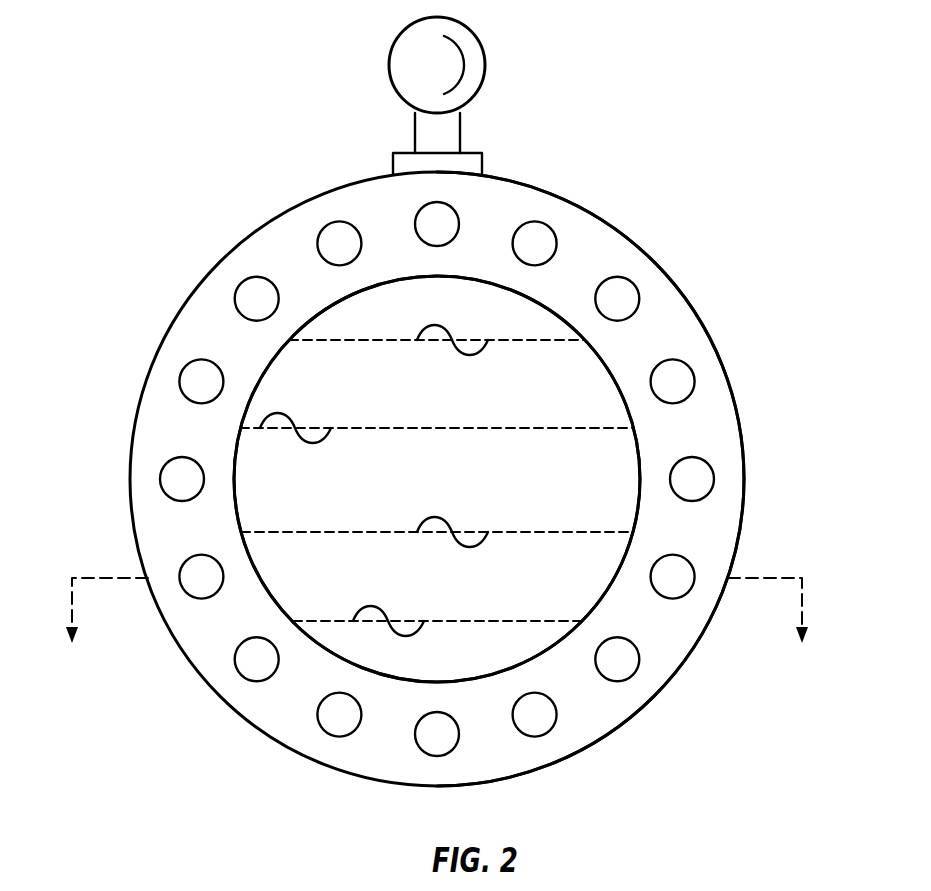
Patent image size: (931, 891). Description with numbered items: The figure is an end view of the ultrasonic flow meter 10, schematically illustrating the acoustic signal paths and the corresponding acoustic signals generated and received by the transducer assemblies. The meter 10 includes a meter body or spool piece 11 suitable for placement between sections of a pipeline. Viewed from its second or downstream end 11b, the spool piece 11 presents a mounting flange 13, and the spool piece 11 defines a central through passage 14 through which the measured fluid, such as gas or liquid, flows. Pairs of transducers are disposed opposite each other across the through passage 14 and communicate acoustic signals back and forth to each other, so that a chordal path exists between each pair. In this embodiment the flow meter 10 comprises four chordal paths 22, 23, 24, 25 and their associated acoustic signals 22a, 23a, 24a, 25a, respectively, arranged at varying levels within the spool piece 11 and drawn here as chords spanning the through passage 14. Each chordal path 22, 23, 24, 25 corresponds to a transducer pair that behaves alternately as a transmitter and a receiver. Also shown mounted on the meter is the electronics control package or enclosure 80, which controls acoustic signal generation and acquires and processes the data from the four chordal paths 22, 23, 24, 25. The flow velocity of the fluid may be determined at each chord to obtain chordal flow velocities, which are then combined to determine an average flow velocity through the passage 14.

The ultrasonic flow meter 10 is at (727, 96).
The spool piece 11 is at (653, 258).
The second or downstream end 11b is at (742, 412).
The mounting flange 13 is at (590, 479).
The central through passage 14 is at (276, 459).
The acoustic signal path 22 is at (487, 622).
The acoustic signal 22a is at (406, 636).
The acoustic signal path 23 is at (303, 533).
The acoustic signal 23a is at (470, 547).
The acoustic signal path 24 is at (423, 429).
The acoustic signal 24a is at (313, 443).
The acoustic signal path 25 is at (317, 341).
The acoustic signal 25a is at (470, 355).
The electronics control package 80 is at (488, 63).